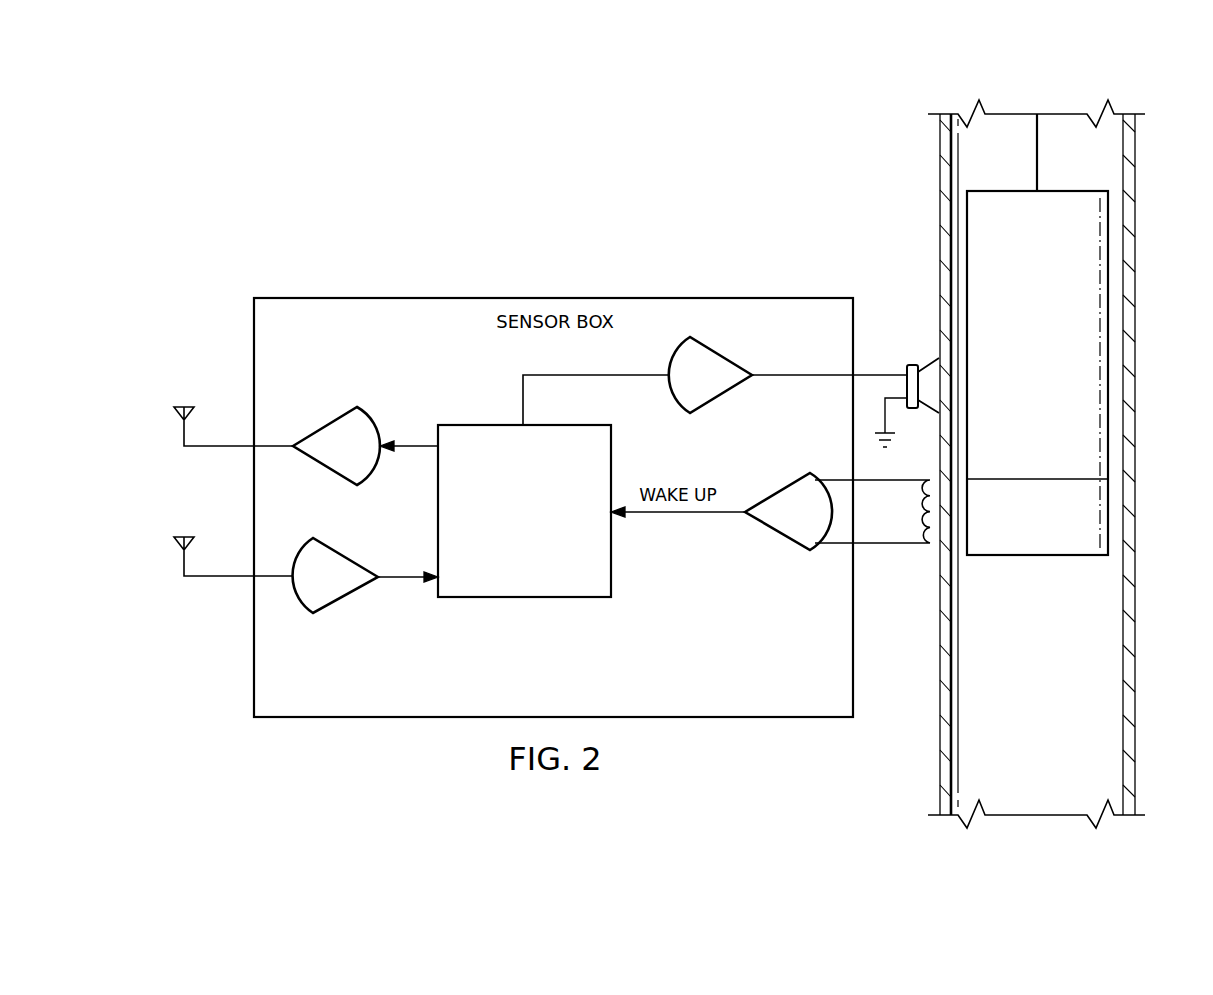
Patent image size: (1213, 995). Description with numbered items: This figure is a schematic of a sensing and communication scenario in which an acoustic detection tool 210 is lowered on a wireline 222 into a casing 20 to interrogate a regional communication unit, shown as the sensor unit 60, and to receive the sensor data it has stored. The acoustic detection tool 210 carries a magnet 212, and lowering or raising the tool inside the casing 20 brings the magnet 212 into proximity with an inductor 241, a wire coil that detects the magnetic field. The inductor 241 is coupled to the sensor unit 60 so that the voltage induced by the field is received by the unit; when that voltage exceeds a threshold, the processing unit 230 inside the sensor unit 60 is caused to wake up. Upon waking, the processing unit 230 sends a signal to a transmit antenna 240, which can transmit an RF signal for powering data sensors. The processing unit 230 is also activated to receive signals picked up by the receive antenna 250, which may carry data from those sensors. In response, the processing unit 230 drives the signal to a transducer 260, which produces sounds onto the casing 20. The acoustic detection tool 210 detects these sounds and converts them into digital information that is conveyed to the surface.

The casing 20 is at (1137, 277).
The sensor unit 60 is at (418, 298).
The acoustic detection tool 210 is at (1062, 196).
The magnet 212 is at (1063, 557).
The wireline 222 is at (1036, 132).
The processing unit 230 is at (497, 598).
The transmit antenna 240 is at (178, 412).
The inductor 241 is at (928, 547).
The receive antenna 250 is at (178, 542).
The transducer 260 is at (910, 365).